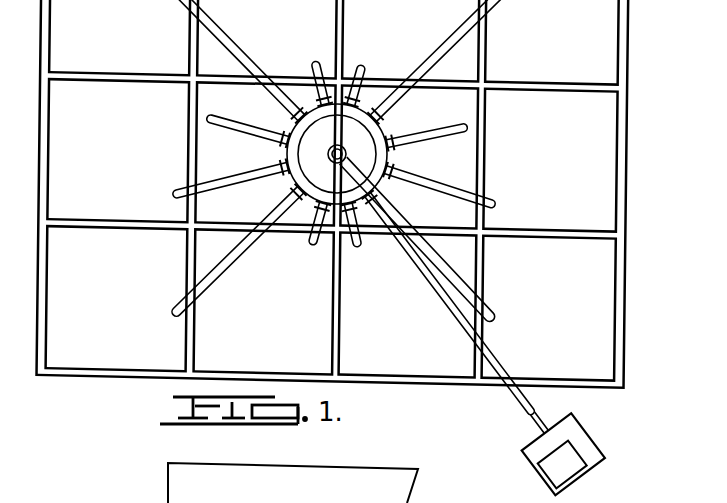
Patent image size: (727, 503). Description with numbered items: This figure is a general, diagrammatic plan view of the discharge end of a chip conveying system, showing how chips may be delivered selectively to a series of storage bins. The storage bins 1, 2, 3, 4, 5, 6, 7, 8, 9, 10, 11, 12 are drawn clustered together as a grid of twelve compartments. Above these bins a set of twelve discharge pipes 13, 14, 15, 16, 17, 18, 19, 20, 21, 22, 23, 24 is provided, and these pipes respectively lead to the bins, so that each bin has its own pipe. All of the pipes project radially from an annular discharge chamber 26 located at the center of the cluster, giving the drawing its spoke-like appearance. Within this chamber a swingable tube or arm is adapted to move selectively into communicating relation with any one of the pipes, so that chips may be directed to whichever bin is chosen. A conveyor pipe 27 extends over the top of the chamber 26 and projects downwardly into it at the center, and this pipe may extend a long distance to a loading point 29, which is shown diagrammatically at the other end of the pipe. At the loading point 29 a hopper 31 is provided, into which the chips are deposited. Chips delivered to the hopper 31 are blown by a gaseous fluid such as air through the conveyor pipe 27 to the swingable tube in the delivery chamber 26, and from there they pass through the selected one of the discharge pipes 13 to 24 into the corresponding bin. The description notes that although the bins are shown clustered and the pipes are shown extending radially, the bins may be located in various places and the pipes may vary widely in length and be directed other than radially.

The storage bin 1 is at (122, 22).
The storage bin 2 is at (277, 22).
The storage bin 3 is at (408, 20).
The storage bin 4 is at (560, 22).
The storage bin 5 is at (116, 160).
The storage bin 6 is at (272, 170).
The storage bin 7 is at (438, 168).
The storage bin 8 is at (562, 170).
The storage bin 9 is at (120, 304).
The storage bin 10 is at (280, 320).
The storage bin 11 is at (410, 320).
The storage bin 12 is at (566, 320).
The discharge pipe 13 is at (243, 57).
The discharge pipe 14 is at (320, 47).
The discharge pipe 15 is at (369, 67).
The discharge pipe 16 is at (445, 53).
The discharge pipe 17 is at (230, 177).
The discharge pipe 18 is at (244, 132).
The discharge pipe 19 is at (462, 131).
The discharge pipe 20 is at (463, 200).
The discharge pipe 21 is at (203, 291).
The discharge pipe 22 is at (309, 243).
The discharge pipe 23 is at (362, 250).
The discharge pipe 24 is at (462, 283).
The annular discharge chamber 26 is at (366, 141).
The conveyor pipe 27 is at (468, 326).
The loading point 29 is at (600, 440).
The hopper 31 is at (548, 481).